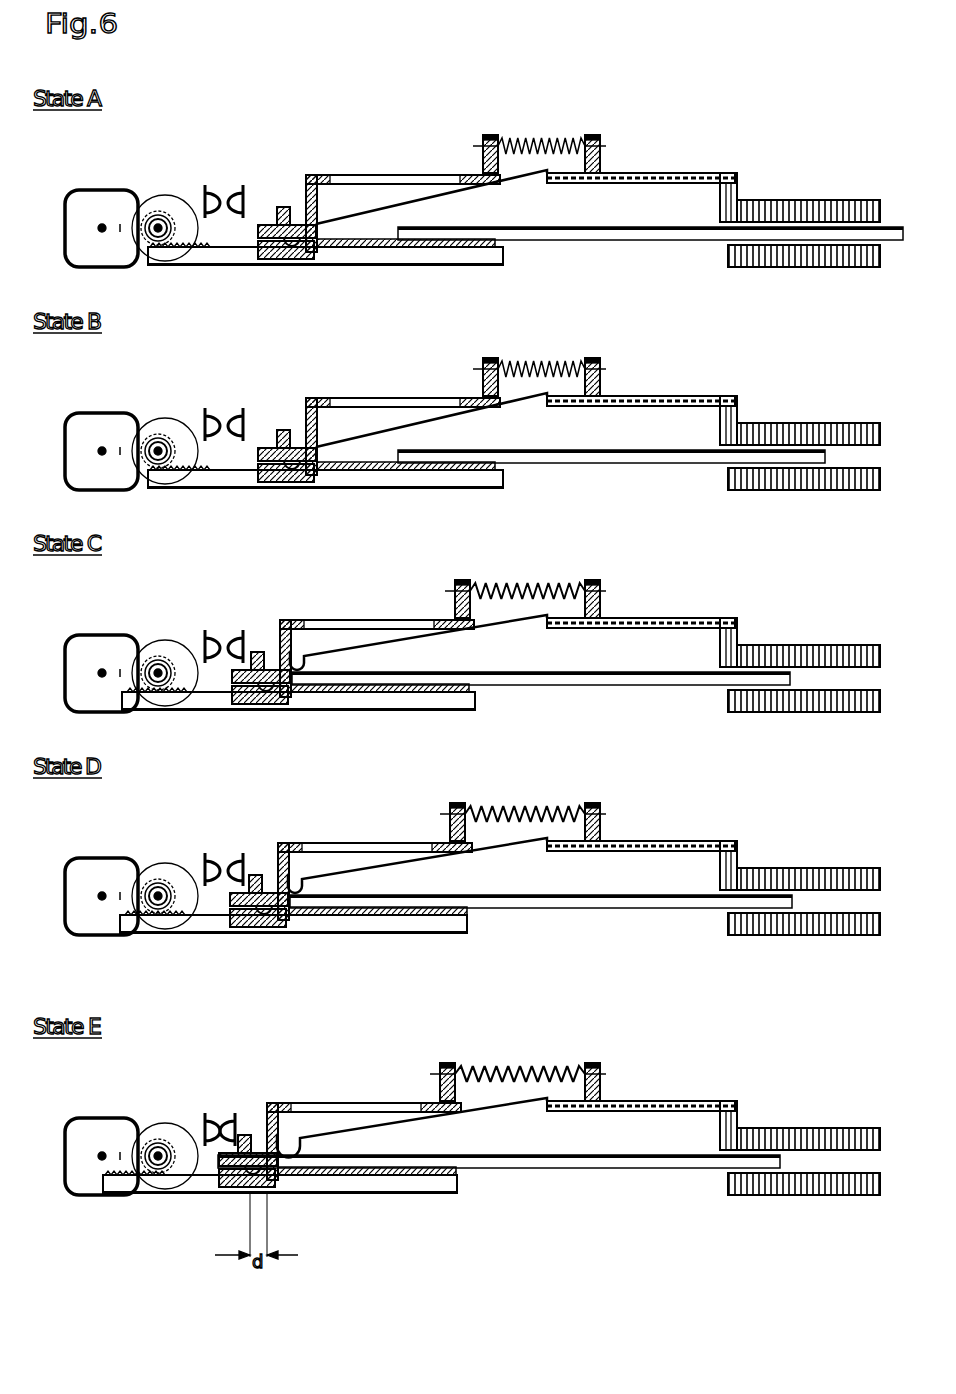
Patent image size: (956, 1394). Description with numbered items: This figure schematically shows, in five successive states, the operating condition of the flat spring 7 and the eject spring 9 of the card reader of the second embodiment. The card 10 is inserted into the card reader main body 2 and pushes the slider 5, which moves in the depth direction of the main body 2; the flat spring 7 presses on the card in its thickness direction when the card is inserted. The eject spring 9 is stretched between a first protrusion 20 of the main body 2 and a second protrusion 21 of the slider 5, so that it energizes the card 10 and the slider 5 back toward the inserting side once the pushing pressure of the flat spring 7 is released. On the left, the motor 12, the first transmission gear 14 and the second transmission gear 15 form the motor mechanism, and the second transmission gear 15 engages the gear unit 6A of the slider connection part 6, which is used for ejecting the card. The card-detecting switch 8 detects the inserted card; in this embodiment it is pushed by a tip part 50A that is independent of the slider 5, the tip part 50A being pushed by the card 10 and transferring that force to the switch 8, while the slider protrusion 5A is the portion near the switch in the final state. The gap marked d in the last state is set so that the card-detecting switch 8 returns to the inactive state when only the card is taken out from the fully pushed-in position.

The card reader main body 2 is at (629, 172).
The slider 5 is at (311, 177).
The slider protrusion 5A is at (245, 1138).
The slider connection part 6 is at (219, 266).
The gear unit 6A is at (160, 264).
The flat spring 7 is at (417, 182).
The card-detecting switch 8 is at (223, 189).
The eject spring 9 is at (538, 138).
The card 10 is at (715, 222).
The motor 12 is at (104, 197).
The first transmission gear 14 is at (144, 199).
The second transmission gear 15 is at (176, 210).
The first protrusion 20 is at (594, 134).
The second protrusion 21 is at (490, 134).
The tip part 50A is at (283, 208).